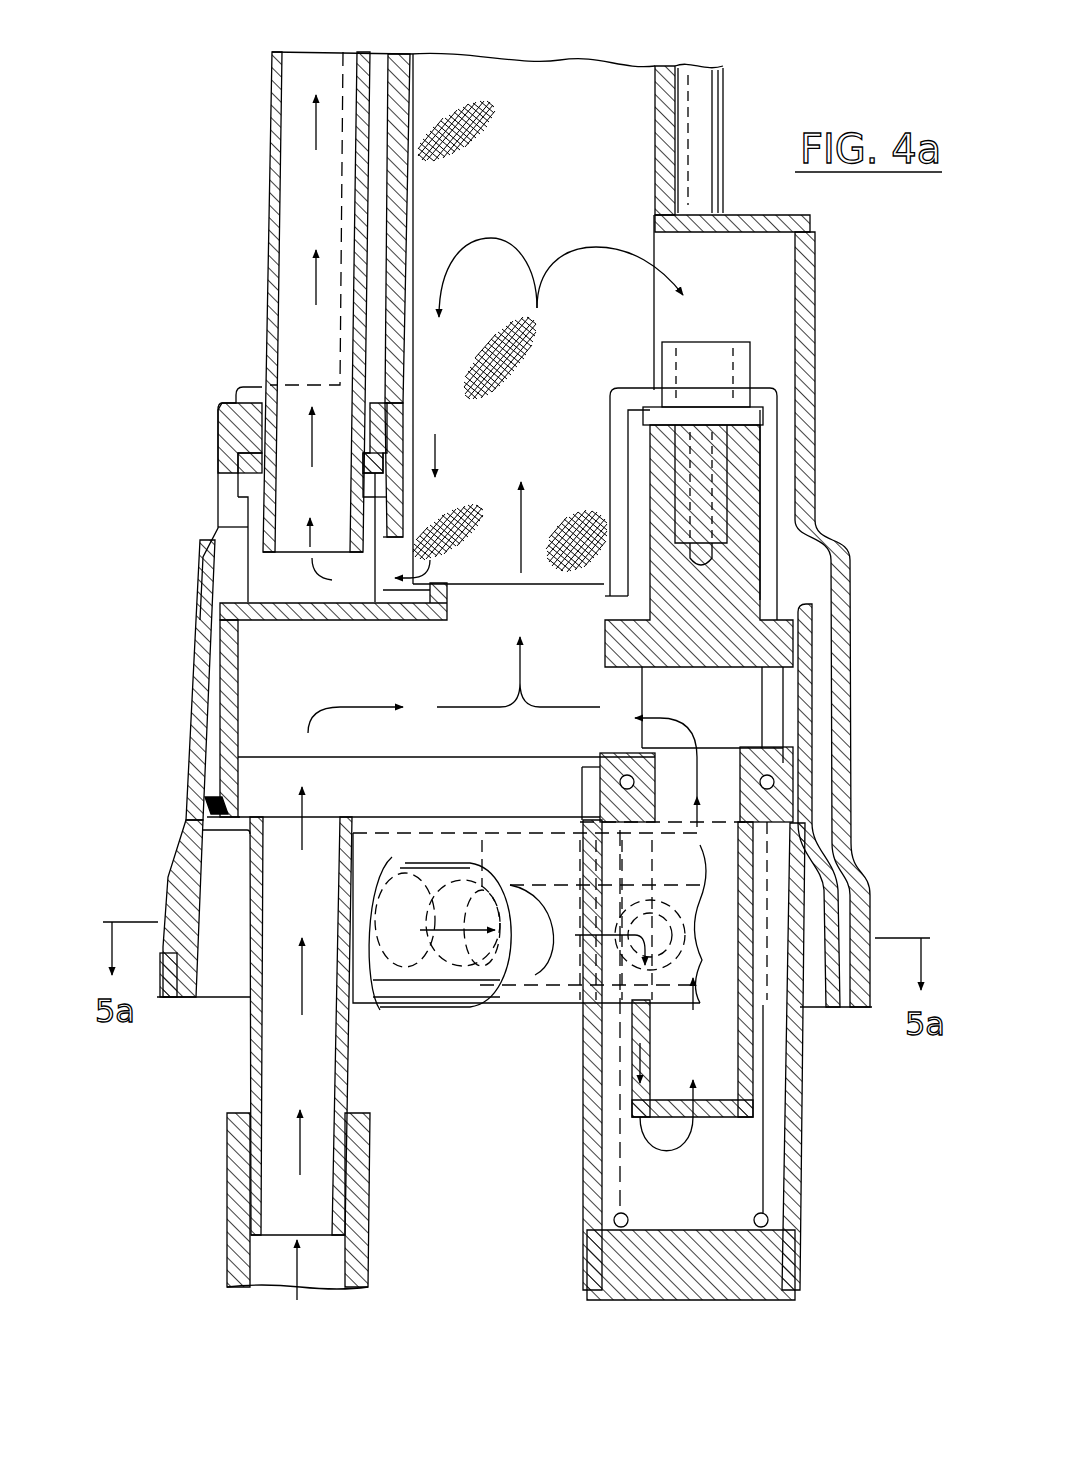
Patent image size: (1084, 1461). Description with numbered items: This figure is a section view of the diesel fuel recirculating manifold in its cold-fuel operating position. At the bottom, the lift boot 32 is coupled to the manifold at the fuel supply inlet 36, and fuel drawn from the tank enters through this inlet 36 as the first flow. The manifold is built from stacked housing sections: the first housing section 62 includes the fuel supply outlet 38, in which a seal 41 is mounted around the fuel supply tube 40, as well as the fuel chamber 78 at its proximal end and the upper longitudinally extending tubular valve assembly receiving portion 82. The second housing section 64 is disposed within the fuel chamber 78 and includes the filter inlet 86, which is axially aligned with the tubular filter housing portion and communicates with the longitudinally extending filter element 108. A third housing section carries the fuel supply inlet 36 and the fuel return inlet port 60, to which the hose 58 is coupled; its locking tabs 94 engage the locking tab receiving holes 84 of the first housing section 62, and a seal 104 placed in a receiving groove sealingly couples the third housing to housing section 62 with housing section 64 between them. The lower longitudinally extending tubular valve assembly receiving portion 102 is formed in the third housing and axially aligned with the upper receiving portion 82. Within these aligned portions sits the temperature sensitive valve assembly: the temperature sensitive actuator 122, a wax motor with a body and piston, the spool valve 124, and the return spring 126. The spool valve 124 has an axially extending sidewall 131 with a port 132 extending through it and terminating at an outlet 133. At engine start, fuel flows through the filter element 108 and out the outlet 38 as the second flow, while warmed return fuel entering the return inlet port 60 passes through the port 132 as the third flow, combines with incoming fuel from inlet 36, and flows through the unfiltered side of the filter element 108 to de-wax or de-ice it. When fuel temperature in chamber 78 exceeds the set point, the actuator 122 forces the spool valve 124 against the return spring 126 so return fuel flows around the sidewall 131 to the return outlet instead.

The lift boot 32 is at (232, 1200).
The fuel supply inlet 36 is at (258, 1040).
The fuel supply outlet 38 is at (250, 397).
The fuel supply tube 40 is at (272, 178).
The seal 41 is at (240, 470).
The hose 58 is at (423, 1000).
The fuel return inlet port 60 is at (533, 953).
The first housing section 62 is at (706, 132).
The second housing section 64 is at (226, 626).
The fuel chamber 78 is at (820, 582).
The upper longitudinally extending tubular valve assembly receiving portion 82 is at (817, 272).
The locking tab receiving holes 84 is at (168, 895).
The filter inlet 86 is at (545, 595).
The locking tabs 94 is at (182, 925).
The lower longitudinally extending tubular valve assembly receiving portion 102 is at (803, 1132).
The seal 104 is at (195, 762).
The filter element 108 is at (602, 80).
The temperature sensitive actuator 122 is at (733, 352).
The spool valve 124 is at (752, 596).
The return spring 126 is at (797, 1206).
The axially extending sidewall 131 is at (745, 1082).
The port 132 is at (720, 1105).
The outlet 133 is at (632, 722).